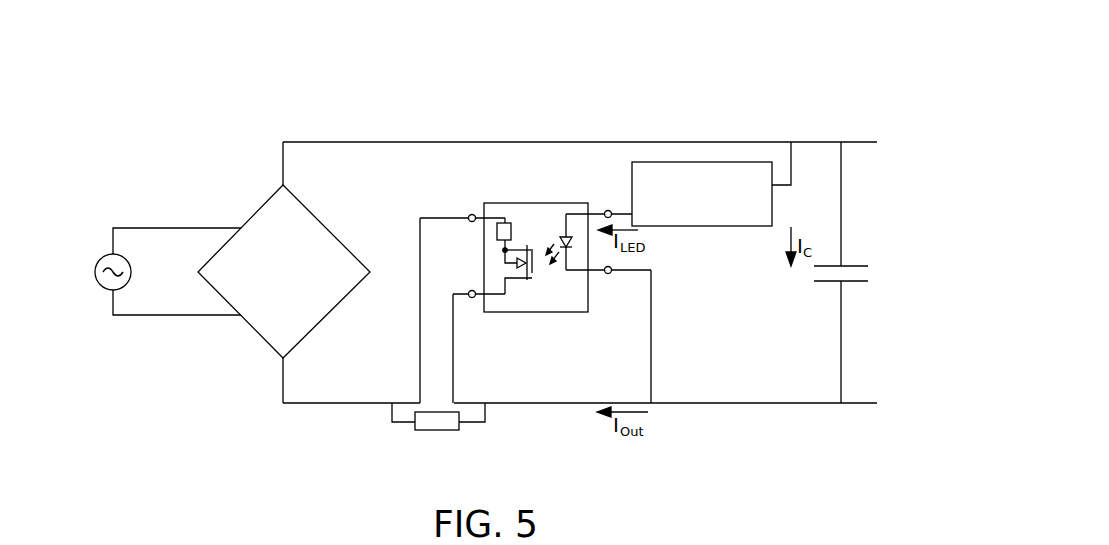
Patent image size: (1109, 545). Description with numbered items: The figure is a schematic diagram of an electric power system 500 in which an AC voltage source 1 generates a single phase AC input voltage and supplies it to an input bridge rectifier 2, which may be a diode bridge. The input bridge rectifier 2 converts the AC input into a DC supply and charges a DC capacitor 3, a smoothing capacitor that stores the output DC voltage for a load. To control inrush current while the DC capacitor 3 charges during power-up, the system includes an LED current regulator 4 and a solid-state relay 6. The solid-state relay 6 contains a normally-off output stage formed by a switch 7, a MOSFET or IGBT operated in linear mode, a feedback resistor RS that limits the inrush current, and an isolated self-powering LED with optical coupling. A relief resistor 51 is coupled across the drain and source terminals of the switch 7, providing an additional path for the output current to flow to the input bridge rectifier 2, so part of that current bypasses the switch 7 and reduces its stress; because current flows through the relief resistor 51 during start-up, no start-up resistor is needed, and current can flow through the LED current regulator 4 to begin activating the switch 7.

The electric power system 500 is at (741, 48).
The AC voltage source 1 is at (98, 255).
The input bridge rectifier 2 is at (326, 227).
The DC capacitor 3 is at (853, 266).
The LED current regulator 4 is at (703, 162).
The relief resistor 51 is at (438, 431).
The solid-state relay 6 is at (535, 229).
The switch 7 is at (498, 256).